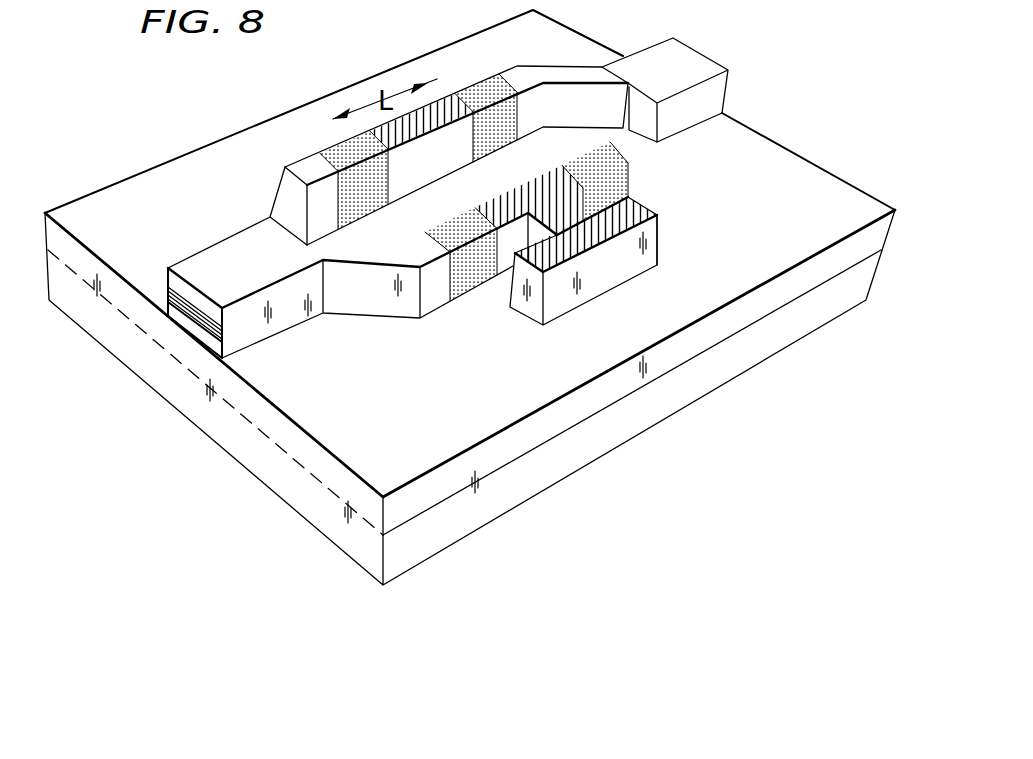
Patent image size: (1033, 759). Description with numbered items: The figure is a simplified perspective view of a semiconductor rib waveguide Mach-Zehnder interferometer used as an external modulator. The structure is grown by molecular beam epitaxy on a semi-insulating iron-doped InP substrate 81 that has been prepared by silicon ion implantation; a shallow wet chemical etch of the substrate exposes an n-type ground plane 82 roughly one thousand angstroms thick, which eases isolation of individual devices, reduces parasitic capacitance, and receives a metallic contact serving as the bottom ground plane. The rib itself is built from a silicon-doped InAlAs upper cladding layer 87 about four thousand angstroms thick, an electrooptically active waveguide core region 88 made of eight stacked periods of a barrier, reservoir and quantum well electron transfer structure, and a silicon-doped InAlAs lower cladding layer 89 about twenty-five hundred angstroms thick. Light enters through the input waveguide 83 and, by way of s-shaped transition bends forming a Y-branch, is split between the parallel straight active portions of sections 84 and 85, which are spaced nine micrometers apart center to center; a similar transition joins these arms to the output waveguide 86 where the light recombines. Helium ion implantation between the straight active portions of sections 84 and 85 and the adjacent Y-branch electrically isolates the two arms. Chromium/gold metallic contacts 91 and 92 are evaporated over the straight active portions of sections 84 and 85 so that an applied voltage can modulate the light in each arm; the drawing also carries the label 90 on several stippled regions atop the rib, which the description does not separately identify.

The semi-insulating Fe-doped InP substrate 81 is at (323, 505).
The n-type ground plane 82 is at (373, 512).
The input waveguide 83 is at (344, 356).
The section 84 is at (499, 337).
The section 85 is at (268, 166).
The output waveguide 86 is at (732, 157).
The upper cladding layer 87 is at (192, 290).
The waveguide core region 88 is at (203, 332).
The lower cladding layer 89 is at (173, 317).
The electrode contacts 90 is at (322, 158).
The metallic contact 91 is at (650, 210).
The metallic contact 92 is at (449, 98).